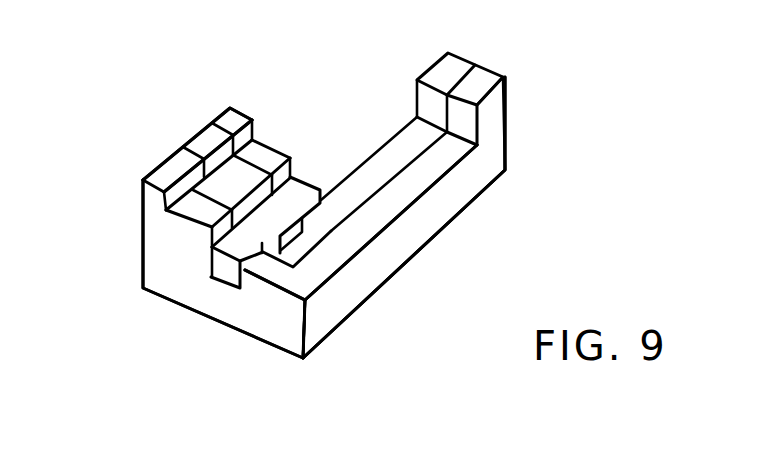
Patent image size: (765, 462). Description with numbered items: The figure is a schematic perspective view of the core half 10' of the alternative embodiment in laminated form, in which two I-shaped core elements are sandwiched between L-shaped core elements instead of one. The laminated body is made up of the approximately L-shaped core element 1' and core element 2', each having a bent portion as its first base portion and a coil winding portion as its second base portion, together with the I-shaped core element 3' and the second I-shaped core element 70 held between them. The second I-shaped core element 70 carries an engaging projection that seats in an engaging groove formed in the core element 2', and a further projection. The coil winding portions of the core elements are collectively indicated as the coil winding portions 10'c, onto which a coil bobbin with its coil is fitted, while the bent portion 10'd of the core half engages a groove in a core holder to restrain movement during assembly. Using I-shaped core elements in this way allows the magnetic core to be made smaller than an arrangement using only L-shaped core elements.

The core half 10' is at (397, 205).
The coil winding portions 10'c is at (404, 235).
The bent portion 10'd is at (196, 283).
The core element 1' is at (384, 165).
The core element 2' is at (404, 217).
The I-shaped core element 3' is at (236, 183).
The second I-shaped core element 70 is at (185, 156).